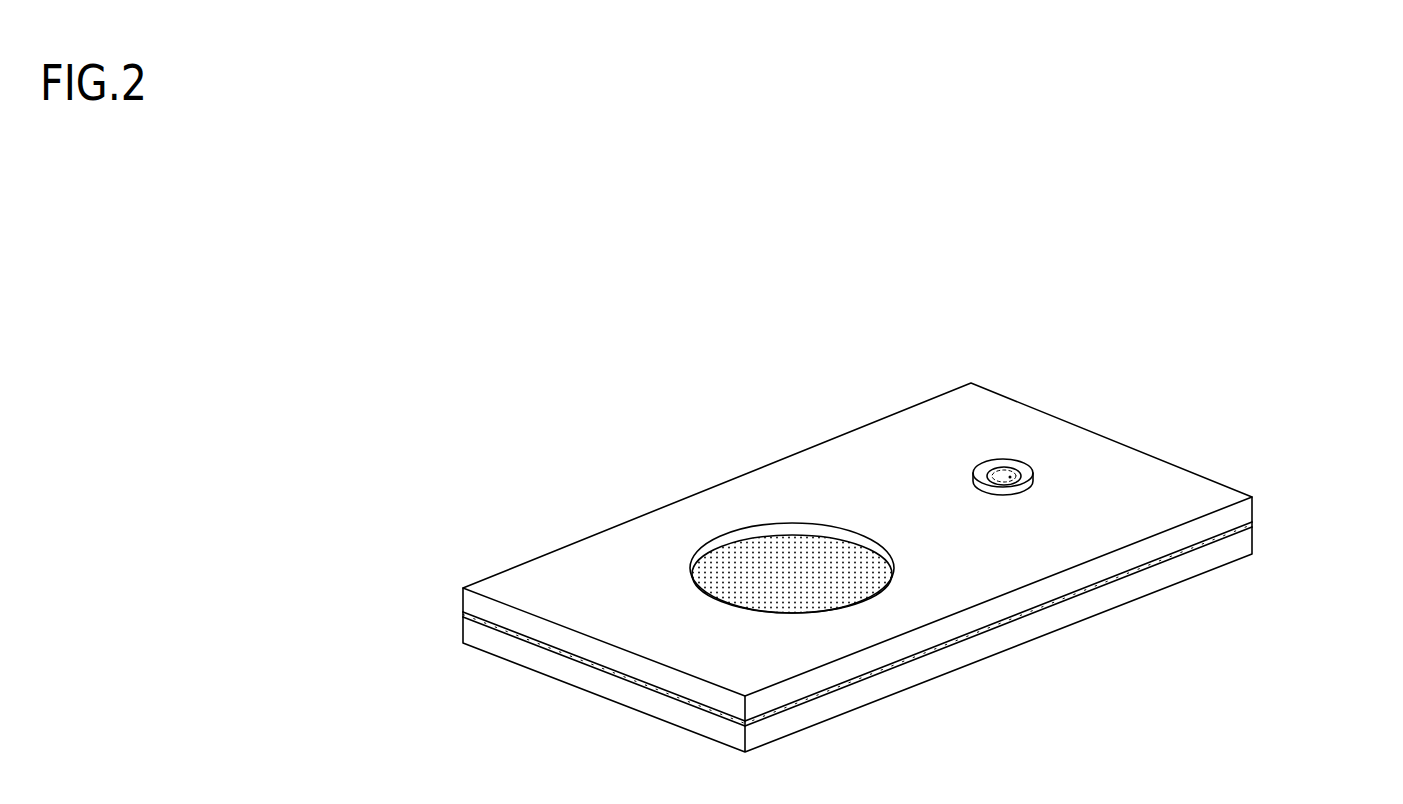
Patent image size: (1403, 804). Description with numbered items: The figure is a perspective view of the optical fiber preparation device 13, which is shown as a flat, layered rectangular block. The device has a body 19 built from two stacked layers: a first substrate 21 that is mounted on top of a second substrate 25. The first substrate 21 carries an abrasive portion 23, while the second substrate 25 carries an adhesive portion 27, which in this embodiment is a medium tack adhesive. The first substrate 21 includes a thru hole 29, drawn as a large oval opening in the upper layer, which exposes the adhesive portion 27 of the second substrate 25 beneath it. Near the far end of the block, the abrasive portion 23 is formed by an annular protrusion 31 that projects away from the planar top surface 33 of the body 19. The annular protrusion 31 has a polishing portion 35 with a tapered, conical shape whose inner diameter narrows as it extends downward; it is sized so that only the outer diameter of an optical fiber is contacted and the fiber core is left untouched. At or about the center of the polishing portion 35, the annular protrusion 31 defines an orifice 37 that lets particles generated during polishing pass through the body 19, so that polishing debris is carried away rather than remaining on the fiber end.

The optical fiber preparation device 13 is at (634, 445).
The body 19 is at (495, 563).
The first substrate 21 is at (1240, 510).
The abrasive portion 23 is at (1040, 462).
The second substrate 25 is at (1227, 553).
The adhesive portion 27 is at (465, 614).
The thru hole 29 is at (747, 588).
The annular protrusion 31 is at (997, 464).
The planar top surface 33 is at (1177, 485).
The polishing portion 35 is at (977, 475).
The orifice 37 is at (1012, 477).